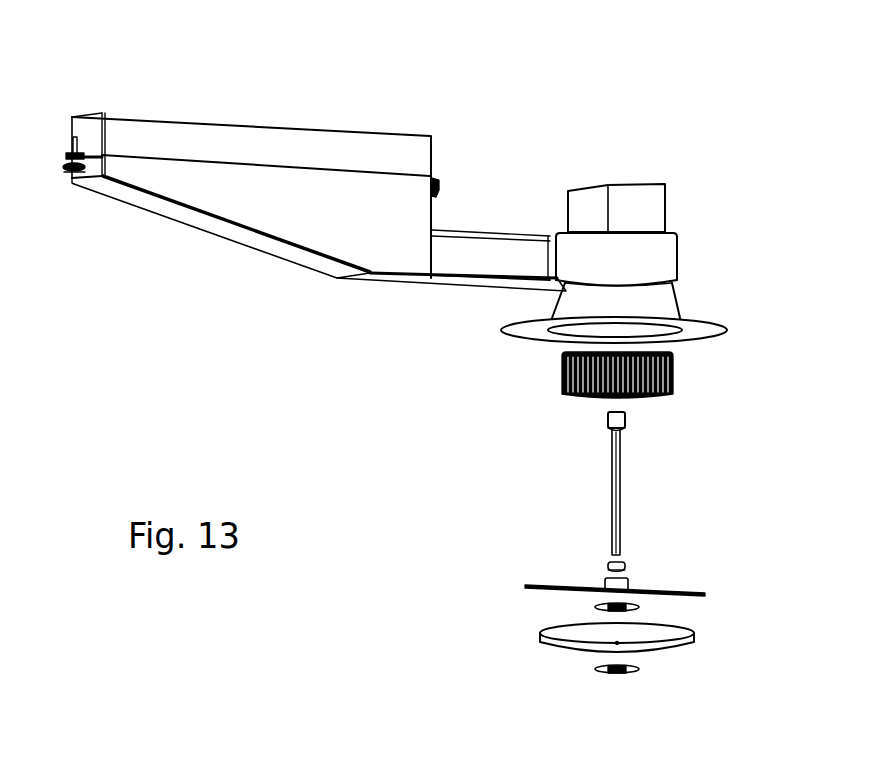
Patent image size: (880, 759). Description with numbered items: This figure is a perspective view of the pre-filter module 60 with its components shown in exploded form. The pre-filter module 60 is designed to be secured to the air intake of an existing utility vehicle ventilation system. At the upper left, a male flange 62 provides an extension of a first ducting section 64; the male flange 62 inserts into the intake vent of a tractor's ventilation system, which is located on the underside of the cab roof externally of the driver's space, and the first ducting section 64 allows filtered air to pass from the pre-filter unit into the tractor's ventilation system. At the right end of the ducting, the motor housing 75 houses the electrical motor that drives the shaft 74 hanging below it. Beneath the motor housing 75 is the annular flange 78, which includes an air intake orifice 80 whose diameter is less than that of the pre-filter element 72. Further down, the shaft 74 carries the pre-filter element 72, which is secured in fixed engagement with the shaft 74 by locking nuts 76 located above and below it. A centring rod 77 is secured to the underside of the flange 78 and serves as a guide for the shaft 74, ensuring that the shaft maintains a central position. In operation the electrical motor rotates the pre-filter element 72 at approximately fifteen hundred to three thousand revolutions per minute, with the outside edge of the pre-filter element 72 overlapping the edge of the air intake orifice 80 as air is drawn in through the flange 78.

The pre-filter module 60 is at (550, 84).
The male flange 62 is at (137, 125).
The first ducting section 64 is at (393, 280).
The pre-filter element 72 is at (688, 638).
The shaft 74 is at (617, 480).
The motor housing 75 is at (662, 195).
The locking nuts 76 is at (597, 608).
The centring rod 77 is at (703, 593).
The flange 78 is at (728, 328).
The air intake orifice 80 is at (680, 334).